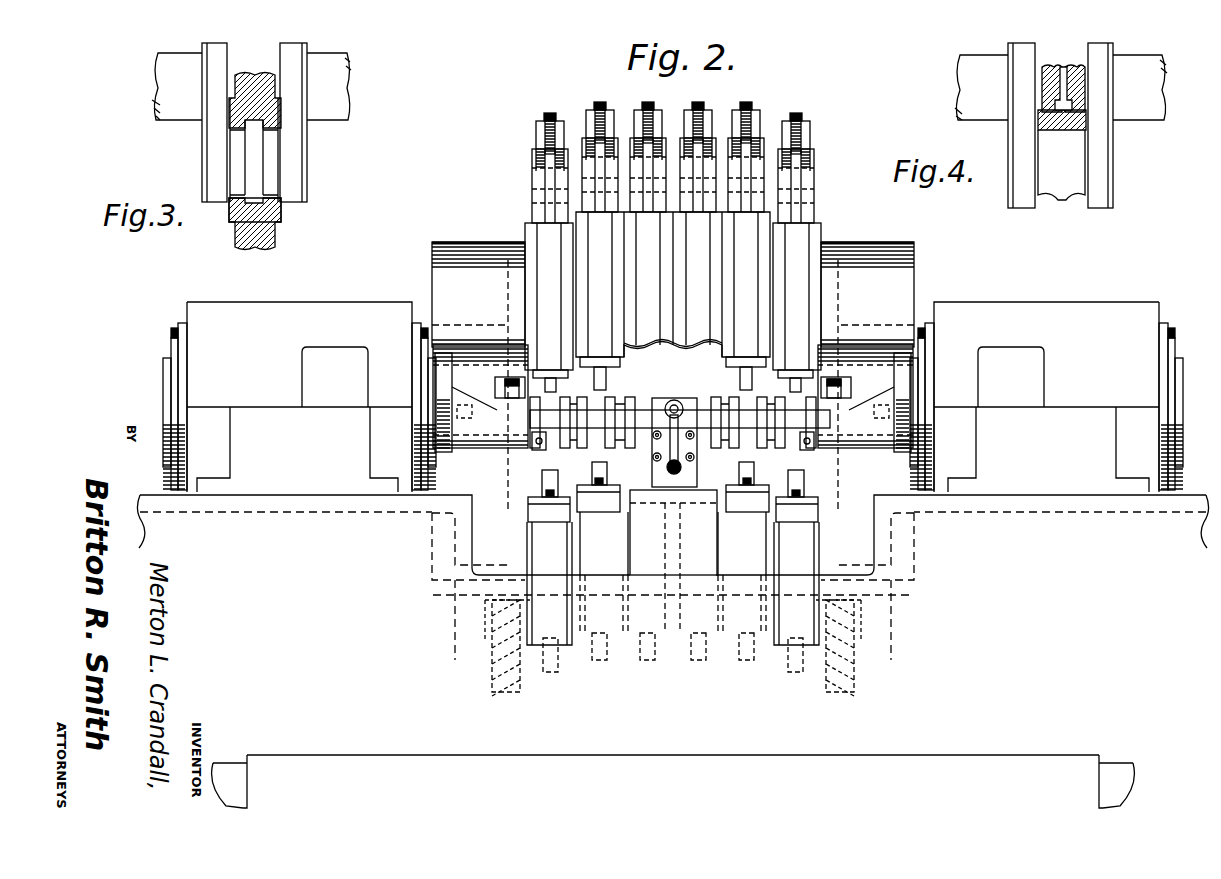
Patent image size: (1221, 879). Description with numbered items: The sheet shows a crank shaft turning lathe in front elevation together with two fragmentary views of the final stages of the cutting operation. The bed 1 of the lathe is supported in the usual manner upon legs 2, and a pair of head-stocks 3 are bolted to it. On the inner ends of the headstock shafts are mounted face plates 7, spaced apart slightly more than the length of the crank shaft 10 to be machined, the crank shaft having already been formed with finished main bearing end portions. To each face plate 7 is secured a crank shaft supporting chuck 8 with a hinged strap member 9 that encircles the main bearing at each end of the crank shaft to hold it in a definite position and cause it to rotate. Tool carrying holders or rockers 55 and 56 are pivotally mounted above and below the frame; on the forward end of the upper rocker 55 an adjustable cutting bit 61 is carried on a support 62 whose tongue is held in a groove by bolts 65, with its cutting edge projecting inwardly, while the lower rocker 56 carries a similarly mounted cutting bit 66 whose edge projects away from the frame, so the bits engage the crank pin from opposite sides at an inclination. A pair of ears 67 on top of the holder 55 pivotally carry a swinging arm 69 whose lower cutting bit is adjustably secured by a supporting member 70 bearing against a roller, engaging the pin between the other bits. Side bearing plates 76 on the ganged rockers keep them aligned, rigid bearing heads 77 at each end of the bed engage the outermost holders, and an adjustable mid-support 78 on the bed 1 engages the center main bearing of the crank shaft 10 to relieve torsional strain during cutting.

In FIG. 2, the bed of the lathe 1 is at (348, 733).
In FIG. 2, the legs 2 is at (240, 786).
In FIG. 2, the head-stocks 3 is at (274, 492).
In FIG. 2, the face plates 7 is at (421, 380).
In FIG. 2, the crank shaft supporting chuck 8 is at (446, 462).
In FIG. 2, the hinged strap member 9 is at (500, 402).
In FIG. 2, the crank shaft 10 is at (624, 406).
In FIG. 3, the crank shaft 10 is at (333, 112).
In FIG. 4, the crank shaft 10 is at (1131, 118).
In FIG. 2, the tool carrying holder or rocker 55 is at (647, 112).
In FIG. 3, the tool carrying holder or rocker 55 is at (256, 67).
In FIG. 2, the tool carrying holder or rocker 56 is at (605, 642).
In FIG. 3, the tool carrying holder or rocker 56 is at (256, 240).
In FIG. 3, the adjustable cutting bit 61 is at (287, 104).
In FIG. 2, the support 62 is at (592, 376).
In FIG. 3, the support 62 is at (238, 86).
In FIG. 2, the bolts 65 is at (740, 385).
In FIG. 2, the cutting bit 66 is at (542, 480).
In FIG. 3, the cutting bit 66 is at (282, 200).
In FIG. 2, the ears 67 is at (538, 168).
In FIG. 2, the swinging arm 69 is at (588, 200).
In FIG. 4, the swinging arm 69 is at (1053, 63).
In FIG. 4, the supporting member 70 is at (1072, 96).
In FIG. 2, the side bearing plates 76 is at (580, 296).
In FIG. 2, the rigid bearing heads 77 is at (447, 292).
In FIG. 2, the adjustable mid-support 78 is at (655, 452).